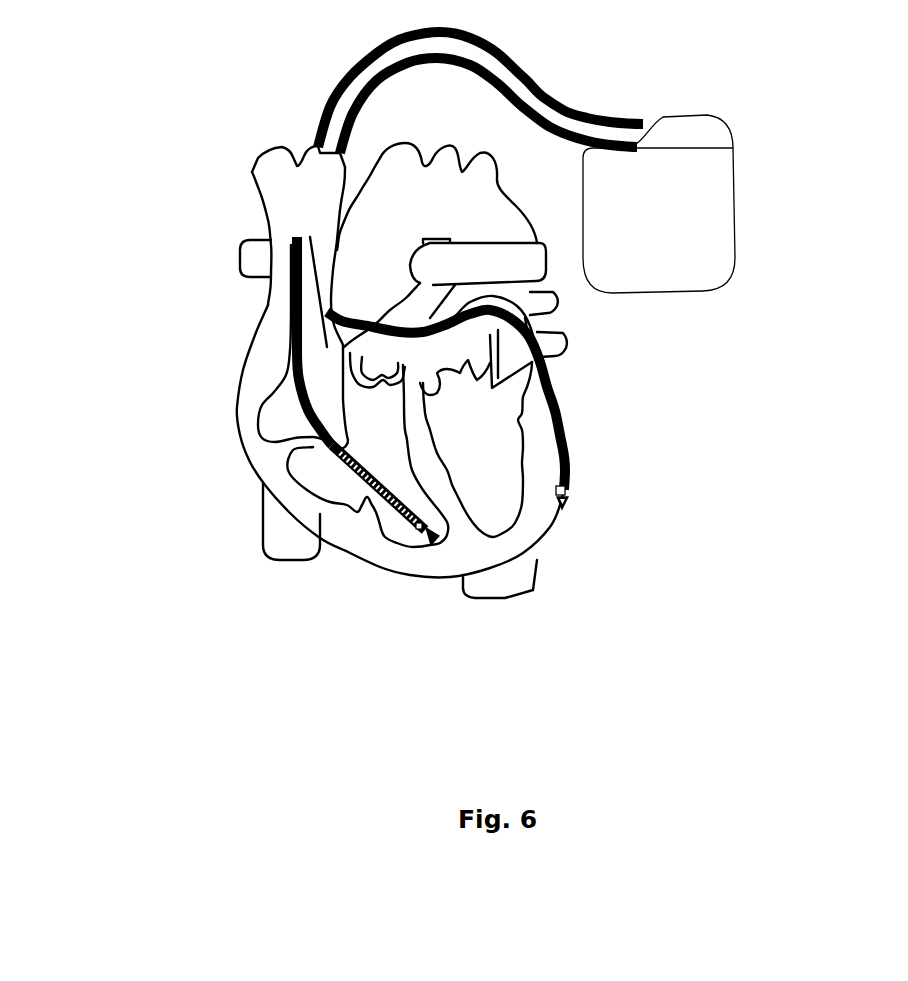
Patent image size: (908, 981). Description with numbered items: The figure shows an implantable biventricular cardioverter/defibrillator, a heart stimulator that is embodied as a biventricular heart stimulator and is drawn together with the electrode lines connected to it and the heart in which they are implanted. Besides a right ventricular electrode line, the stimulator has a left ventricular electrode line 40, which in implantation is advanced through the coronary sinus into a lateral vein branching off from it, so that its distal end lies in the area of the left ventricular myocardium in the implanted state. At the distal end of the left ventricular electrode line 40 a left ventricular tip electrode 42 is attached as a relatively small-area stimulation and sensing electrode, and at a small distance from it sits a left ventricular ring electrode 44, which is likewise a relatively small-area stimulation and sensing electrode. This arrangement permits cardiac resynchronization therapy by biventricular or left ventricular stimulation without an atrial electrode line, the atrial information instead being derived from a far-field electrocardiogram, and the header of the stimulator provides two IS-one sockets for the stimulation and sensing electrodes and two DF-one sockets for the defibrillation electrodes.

The left ventricular electrode line 40 is at (558, 418).
The left ventricular tip electrode 42 is at (562, 502).
The left ventricular ring electrode 44 is at (565, 492).